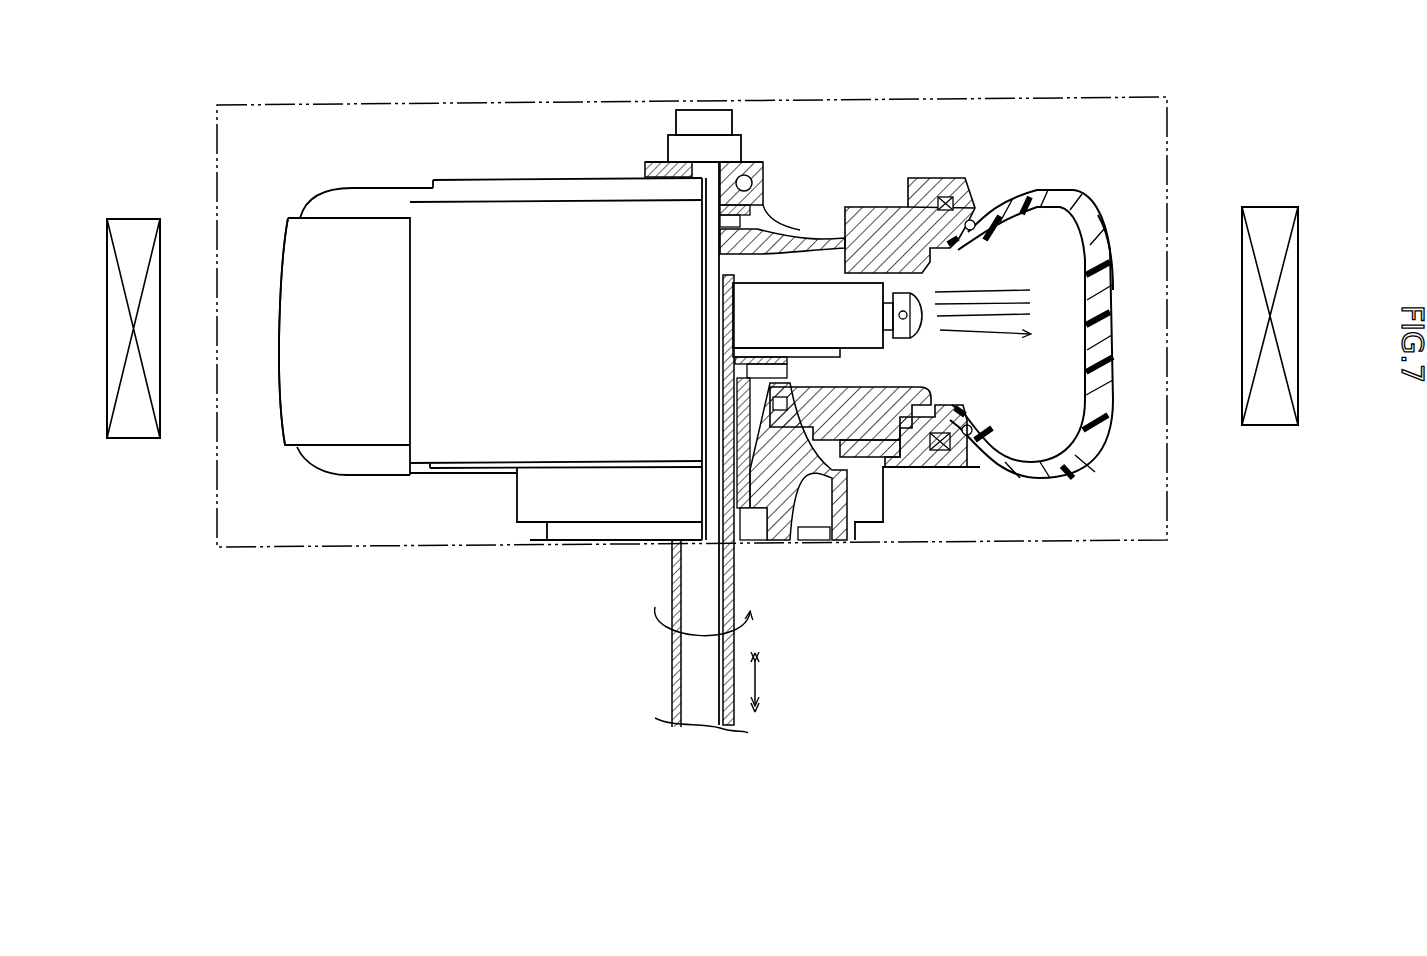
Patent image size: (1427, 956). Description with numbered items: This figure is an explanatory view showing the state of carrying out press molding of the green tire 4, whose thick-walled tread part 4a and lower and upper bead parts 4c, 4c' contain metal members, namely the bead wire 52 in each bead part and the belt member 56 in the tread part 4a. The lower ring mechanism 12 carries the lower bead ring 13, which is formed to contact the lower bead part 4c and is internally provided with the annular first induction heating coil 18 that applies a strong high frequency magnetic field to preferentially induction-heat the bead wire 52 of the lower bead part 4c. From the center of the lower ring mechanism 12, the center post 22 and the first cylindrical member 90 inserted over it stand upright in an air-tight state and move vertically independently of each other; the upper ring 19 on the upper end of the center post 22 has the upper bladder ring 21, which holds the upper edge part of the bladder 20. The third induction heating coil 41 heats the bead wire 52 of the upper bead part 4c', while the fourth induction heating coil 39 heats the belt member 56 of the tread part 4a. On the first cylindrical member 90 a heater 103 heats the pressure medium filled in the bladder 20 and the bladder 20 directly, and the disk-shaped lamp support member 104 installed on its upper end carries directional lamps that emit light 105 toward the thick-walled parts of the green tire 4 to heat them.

The green tire 4 is at (299, 204).
The tread part 4a is at (295, 266).
The lower bead part 4c is at (353, 490).
The upper bead part 4c' is at (355, 171).
The lower ring mechanism 12 is at (897, 509).
The lower bead ring 13 is at (966, 452).
The first induction heating coil 18 is at (940, 452).
The upper ring 19 is at (893, 160).
The bladder 20 is at (479, 195).
The upper bladder ring 21 is at (795, 236).
The center post 22 is at (697, 688).
The fourth induction heating coil 39 is at (1267, 418).
The third induction heating coil 41 is at (945, 198).
The bead wire 52 is at (972, 222).
The belt member 56 is at (1108, 248).
The first cylindrical member 90 is at (735, 582).
The heater 103 is at (910, 330).
The lamp support member 104 is at (862, 337).
The light 105 is at (990, 293).